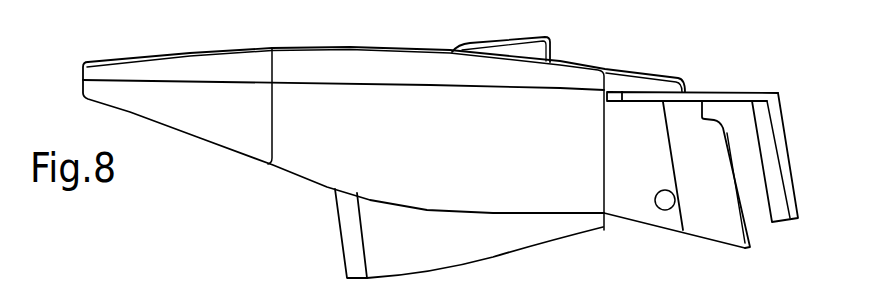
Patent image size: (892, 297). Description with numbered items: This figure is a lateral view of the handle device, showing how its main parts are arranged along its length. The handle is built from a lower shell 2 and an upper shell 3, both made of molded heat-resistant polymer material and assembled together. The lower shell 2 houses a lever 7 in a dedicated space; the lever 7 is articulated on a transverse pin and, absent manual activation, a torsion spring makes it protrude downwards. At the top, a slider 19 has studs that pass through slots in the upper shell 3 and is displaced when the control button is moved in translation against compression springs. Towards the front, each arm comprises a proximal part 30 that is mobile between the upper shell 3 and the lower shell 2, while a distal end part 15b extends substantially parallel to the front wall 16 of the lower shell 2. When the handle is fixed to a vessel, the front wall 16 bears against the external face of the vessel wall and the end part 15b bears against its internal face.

The lower shell 2 is at (205, 132).
The upper shell 3 is at (350, 62).
The lever 7 is at (347, 218).
The slider 19 is at (527, 47).
The proximal part 30 is at (727, 97).
The distal end part 15b is at (785, 166).
The front wall 16 is at (738, 231).